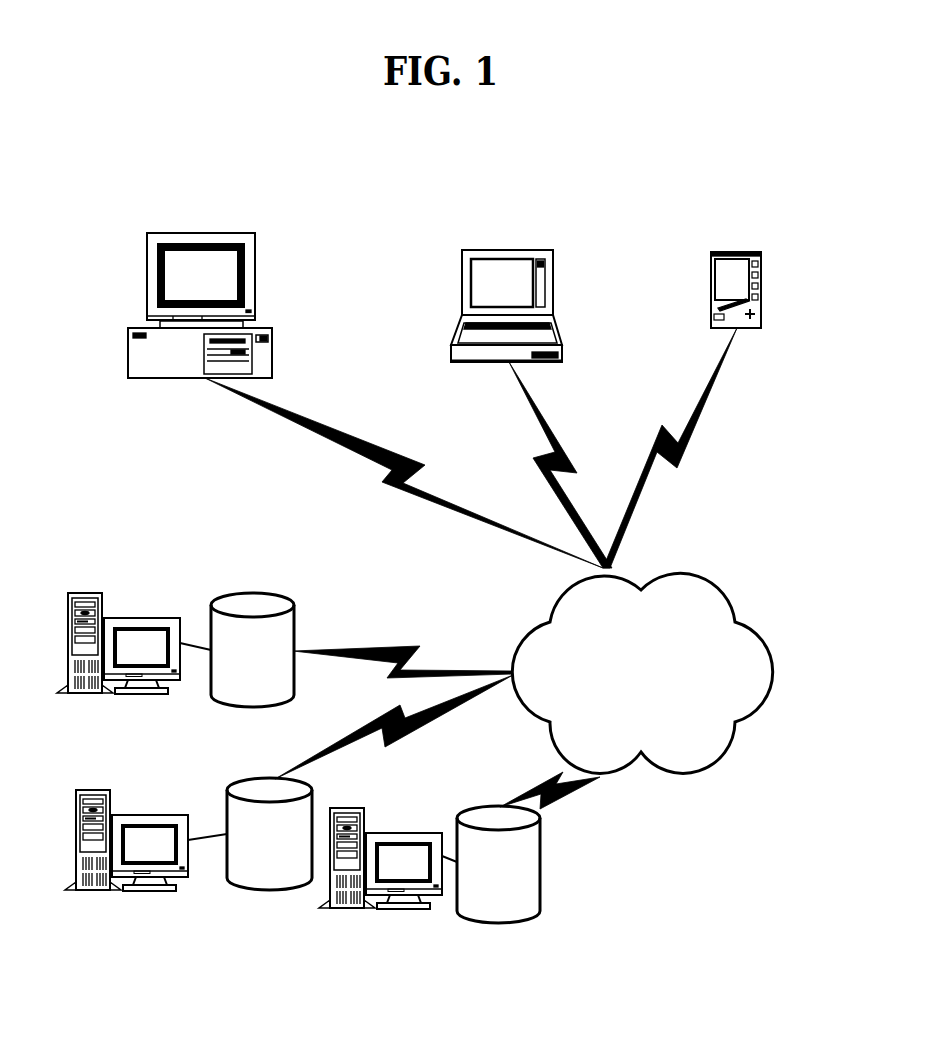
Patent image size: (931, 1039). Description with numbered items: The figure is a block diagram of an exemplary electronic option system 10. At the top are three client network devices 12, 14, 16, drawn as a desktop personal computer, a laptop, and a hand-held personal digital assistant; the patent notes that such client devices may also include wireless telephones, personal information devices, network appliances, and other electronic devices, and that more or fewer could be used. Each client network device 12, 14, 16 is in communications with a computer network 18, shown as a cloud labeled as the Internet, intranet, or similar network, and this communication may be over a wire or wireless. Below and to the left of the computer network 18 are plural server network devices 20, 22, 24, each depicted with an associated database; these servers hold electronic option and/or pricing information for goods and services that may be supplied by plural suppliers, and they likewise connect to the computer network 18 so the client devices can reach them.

The electronic option system 10 is at (720, 172).
The client network device 12 is at (200, 233).
The client network device 14 is at (507, 250).
The client network device 16 is at (736, 252).
The computer network 18 is at (770, 673).
The server network device 20 is at (143, 618).
The server network device 22 is at (150, 815).
The server network device 24 is at (345, 808).